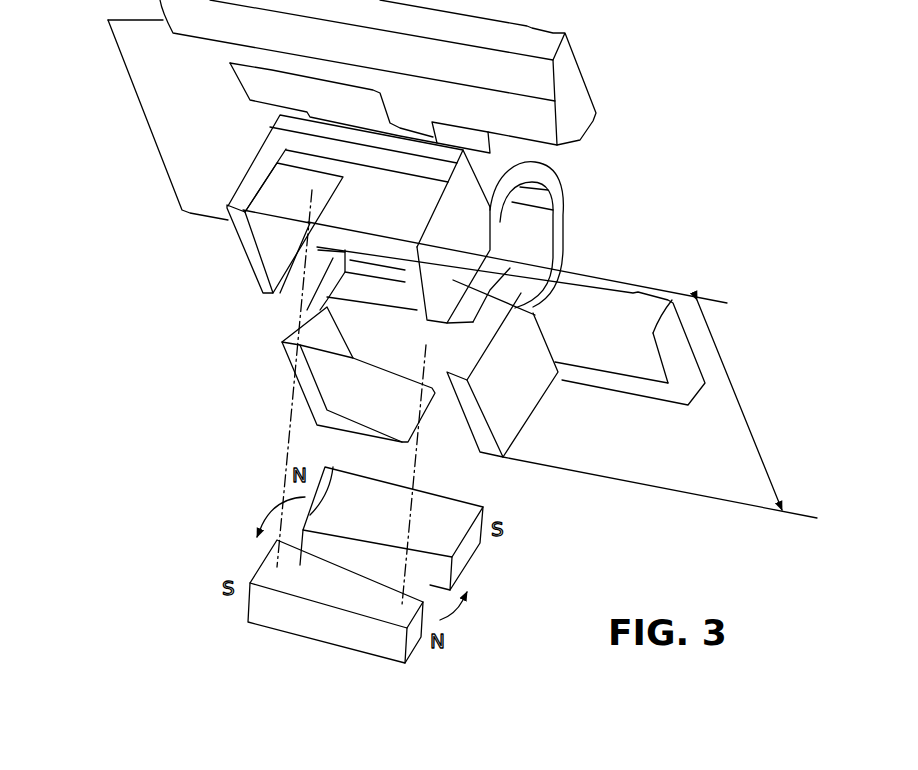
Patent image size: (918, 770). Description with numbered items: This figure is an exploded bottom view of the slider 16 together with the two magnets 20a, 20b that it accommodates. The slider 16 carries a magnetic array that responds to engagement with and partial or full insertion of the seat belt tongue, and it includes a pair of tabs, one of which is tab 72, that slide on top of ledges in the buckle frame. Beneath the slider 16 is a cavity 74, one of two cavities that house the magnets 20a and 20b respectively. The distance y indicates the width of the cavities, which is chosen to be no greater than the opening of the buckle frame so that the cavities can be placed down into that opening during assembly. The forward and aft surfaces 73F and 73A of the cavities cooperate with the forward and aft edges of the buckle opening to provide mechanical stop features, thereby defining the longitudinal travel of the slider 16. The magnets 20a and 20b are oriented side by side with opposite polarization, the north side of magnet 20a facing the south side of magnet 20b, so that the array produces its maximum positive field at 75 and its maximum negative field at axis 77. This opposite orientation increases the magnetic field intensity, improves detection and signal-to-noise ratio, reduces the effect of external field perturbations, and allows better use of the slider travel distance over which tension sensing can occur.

The slider 16 is at (568, 178).
The tab 72 is at (673, 335).
The aft surface 73A is at (245, 247).
The forward surface 73F is at (510, 352).
The cavity 74 is at (452, 350).
The maximum positive field 75 is at (450, 573).
The axis 77 is at (310, 503).
The magnet 20a is at (467, 557).
The magnet 20b is at (253, 612).
The distance y is at (737, 397).